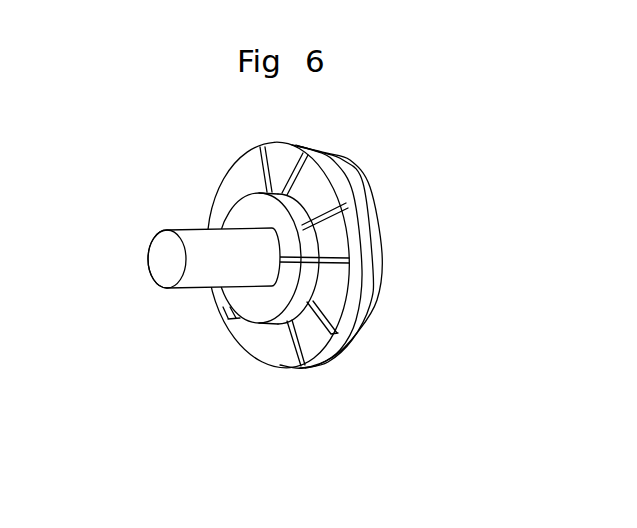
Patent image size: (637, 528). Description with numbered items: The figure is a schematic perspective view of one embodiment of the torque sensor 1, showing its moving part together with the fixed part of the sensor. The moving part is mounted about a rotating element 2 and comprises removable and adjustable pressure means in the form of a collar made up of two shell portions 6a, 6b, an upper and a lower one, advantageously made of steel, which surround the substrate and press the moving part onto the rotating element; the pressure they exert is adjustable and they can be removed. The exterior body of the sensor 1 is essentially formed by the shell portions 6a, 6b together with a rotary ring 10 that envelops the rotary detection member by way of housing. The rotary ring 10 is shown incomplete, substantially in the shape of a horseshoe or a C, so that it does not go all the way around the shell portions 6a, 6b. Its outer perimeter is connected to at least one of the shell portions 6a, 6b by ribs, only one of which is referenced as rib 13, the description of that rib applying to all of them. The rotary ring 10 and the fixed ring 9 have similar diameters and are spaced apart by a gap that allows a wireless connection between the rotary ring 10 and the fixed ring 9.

The torque sensor 1 is at (298, 368).
The shaft 2 is at (197, 248).
The shell portion 6a is at (242, 205).
The shell portion 6b is at (248, 307).
The fixed ring 9 is at (378, 181).
The rotary ring 10 is at (325, 151).
The rib 13 is at (348, 220).